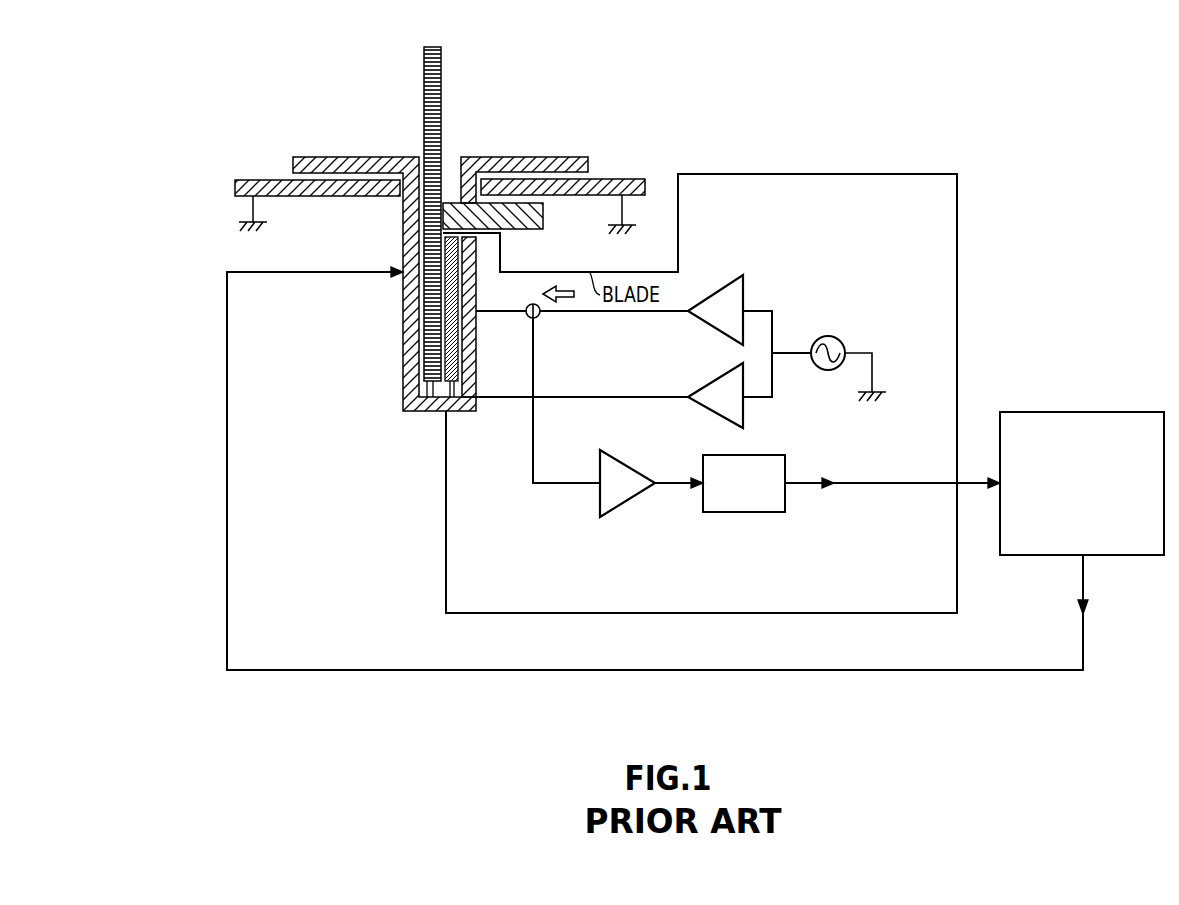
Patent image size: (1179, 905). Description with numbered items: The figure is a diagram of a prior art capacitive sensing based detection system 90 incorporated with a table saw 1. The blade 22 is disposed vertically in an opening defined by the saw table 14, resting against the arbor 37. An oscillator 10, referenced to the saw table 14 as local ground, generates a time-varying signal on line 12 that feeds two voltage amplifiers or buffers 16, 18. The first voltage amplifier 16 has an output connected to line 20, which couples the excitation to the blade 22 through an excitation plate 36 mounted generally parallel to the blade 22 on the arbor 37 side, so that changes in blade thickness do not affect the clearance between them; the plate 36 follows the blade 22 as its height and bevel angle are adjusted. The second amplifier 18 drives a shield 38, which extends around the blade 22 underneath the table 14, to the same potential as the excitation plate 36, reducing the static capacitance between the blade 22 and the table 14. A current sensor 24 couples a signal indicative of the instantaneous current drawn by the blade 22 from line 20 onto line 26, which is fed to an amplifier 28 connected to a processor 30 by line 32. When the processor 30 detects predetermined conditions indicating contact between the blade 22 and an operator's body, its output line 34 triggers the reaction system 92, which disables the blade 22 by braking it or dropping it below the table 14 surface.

The table saw 1 is at (730, 106).
The oscillator 10 is at (846, 340).
The line 12 is at (775, 325).
The saw table 14 is at (258, 180).
The first voltage amplifier 16 is at (745, 290).
The second voltage amplifier 18 is at (745, 413).
The line 20 is at (626, 313).
The blade 22 is at (430, 411).
The current sensor 24 is at (540, 318).
The line 26 is at (563, 486).
The amplifier 28 is at (628, 498).
The processor 30 is at (752, 512).
The line 32 is at (668, 487).
The output line 34 is at (858, 482).
The excitation plate 36 is at (456, 411).
The arbor 37 is at (512, 232).
The shield 38 is at (403, 352).
The detection system 90 is at (886, 174).
The reaction system 92 is at (1072, 412).